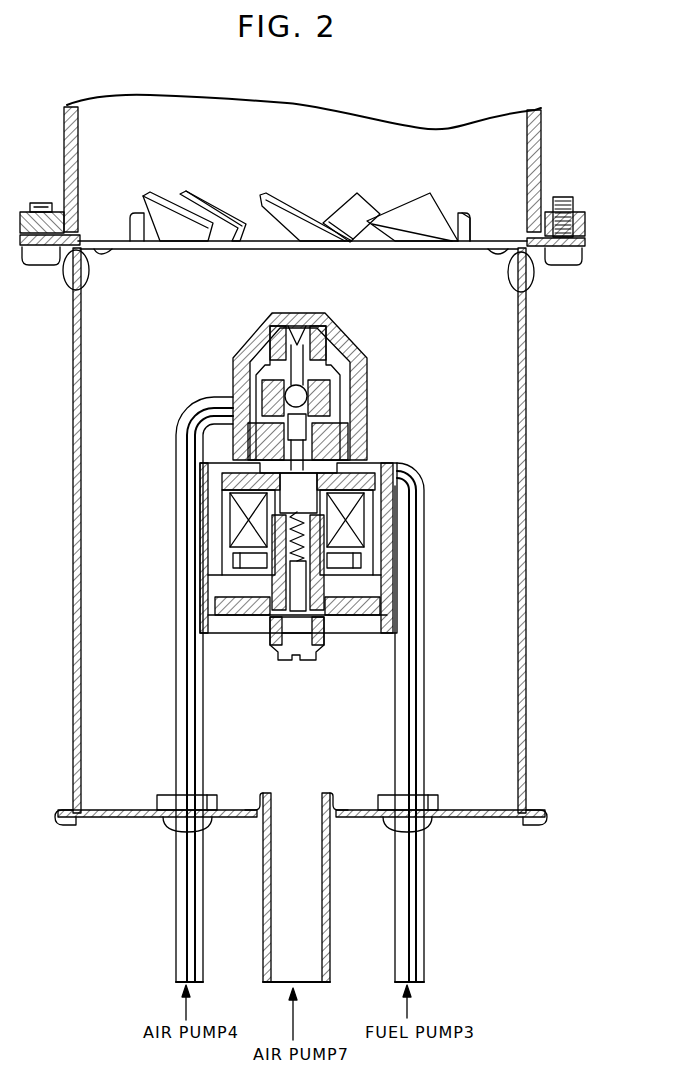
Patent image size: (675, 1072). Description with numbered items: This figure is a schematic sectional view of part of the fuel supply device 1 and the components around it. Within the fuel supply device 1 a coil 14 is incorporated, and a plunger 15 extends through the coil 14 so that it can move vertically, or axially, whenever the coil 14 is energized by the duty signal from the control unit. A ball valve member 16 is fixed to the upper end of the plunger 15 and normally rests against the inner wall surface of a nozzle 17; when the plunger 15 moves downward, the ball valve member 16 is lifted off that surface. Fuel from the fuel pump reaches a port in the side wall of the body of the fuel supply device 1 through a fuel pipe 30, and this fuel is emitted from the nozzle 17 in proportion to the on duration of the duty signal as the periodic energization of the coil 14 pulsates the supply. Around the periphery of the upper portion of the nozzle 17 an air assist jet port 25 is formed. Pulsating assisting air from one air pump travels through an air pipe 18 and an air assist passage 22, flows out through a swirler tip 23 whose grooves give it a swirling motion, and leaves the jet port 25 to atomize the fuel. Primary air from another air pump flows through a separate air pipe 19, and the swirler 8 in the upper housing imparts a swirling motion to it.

The fuel supply device 1 is at (370, 402).
The swirler 8 is at (277, 213).
The coil 14 is at (250, 522).
The plunger 15 is at (300, 430).
The ball valve member 16 is at (293, 398).
The nozzle 17 is at (298, 313).
The air pipe 18 is at (188, 958).
The air pipe 19 is at (310, 958).
The air assist passage 22 is at (262, 350).
The swirler tip 23 is at (263, 327).
The air assist jet port 25 is at (287, 313).
The fuel pipe 30 is at (410, 678).